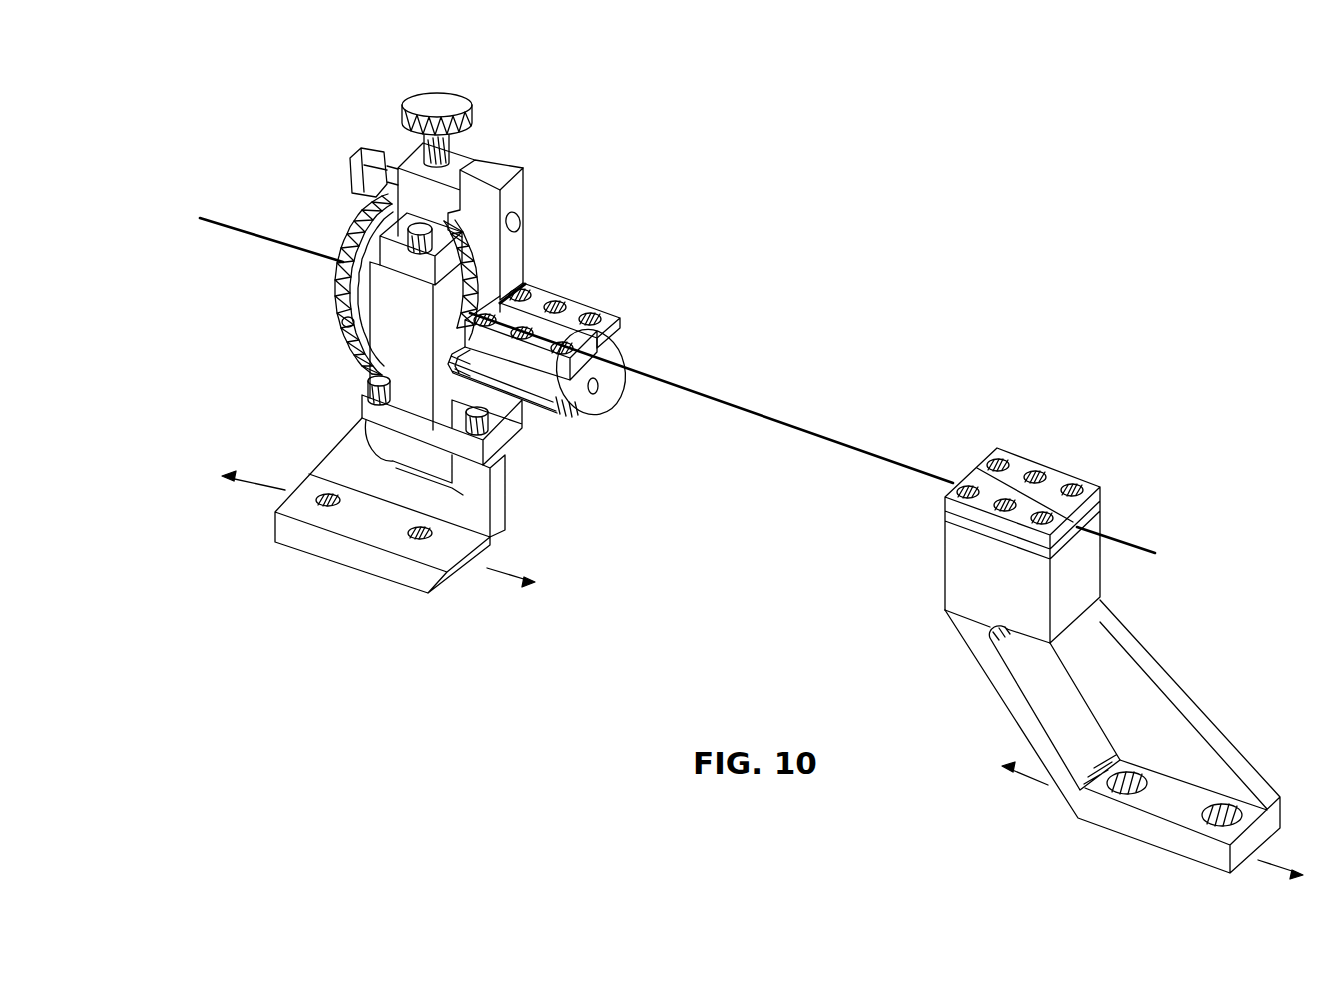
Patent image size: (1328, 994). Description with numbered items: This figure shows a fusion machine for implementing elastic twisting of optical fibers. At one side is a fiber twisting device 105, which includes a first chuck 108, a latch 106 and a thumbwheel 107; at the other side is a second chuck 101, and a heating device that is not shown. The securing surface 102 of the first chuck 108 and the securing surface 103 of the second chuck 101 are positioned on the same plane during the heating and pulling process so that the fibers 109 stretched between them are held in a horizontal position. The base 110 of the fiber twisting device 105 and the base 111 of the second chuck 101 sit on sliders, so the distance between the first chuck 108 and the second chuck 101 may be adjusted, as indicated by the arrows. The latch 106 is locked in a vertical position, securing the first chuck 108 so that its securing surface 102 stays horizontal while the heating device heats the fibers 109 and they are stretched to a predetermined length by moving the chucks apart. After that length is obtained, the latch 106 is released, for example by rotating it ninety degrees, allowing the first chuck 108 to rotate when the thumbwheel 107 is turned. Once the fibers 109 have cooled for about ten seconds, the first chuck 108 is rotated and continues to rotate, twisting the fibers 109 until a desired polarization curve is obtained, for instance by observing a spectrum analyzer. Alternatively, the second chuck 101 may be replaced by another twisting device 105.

The second chuck 101 is at (1124, 616).
The securing surface 102 is at (612, 380).
The securing surface 103 is at (1080, 524).
The fiber twisting device 105 is at (524, 132).
The latch 106 is at (516, 199).
The thumbwheel 107 is at (350, 253).
The first chuck 108 is at (620, 350).
The fibers 109 is at (738, 405).
The base 110 is at (433, 568).
The base 111 is at (1168, 808).